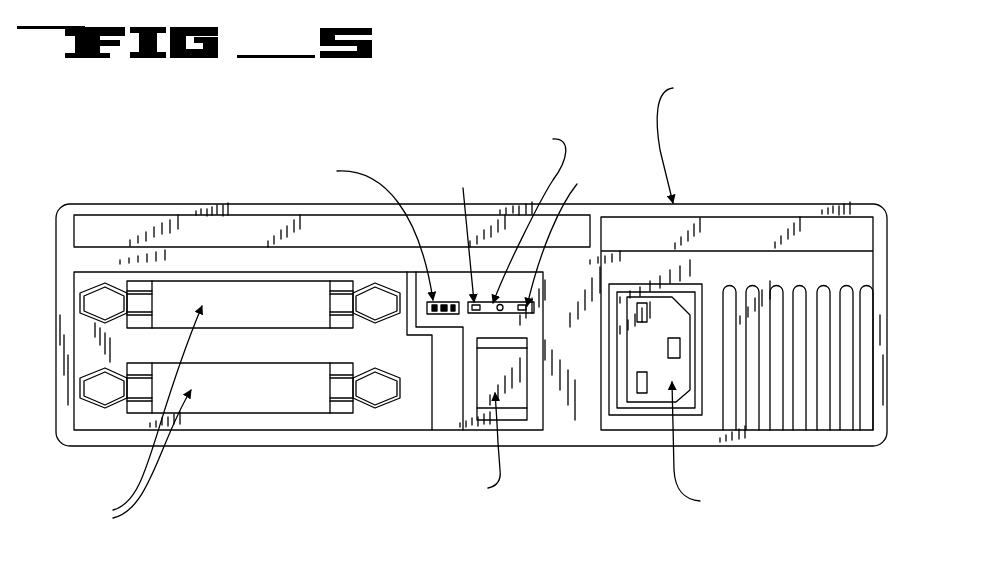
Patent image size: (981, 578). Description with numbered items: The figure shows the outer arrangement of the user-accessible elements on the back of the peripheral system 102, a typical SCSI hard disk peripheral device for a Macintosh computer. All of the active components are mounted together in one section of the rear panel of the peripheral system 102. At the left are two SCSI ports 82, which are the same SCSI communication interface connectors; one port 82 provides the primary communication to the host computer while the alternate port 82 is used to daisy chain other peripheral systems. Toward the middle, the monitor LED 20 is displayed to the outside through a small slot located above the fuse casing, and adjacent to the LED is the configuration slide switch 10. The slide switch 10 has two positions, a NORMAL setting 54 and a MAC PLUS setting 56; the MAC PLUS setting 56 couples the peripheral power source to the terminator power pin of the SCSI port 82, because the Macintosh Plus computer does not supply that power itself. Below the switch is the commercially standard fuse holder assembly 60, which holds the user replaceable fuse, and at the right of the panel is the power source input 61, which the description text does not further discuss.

The peripheral system 102 is at (735, 203).
The SCSI ports 82 is at (287, 317).
The monitor LED 20 is at (431, 301).
The slide switch 10 is at (532, 306).
The NORMAL setting 54 is at (483, 310).
The MAC PLUS setting 56 is at (524, 310).
The user replaceable fuse holder assembly 60 is at (507, 395).
The power source input 61 is at (663, 388).